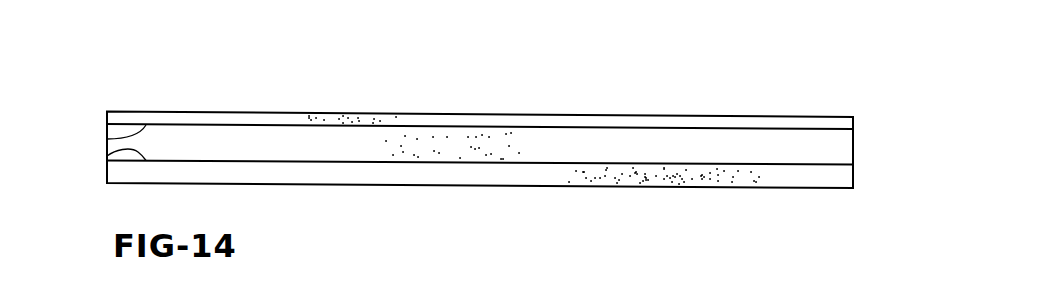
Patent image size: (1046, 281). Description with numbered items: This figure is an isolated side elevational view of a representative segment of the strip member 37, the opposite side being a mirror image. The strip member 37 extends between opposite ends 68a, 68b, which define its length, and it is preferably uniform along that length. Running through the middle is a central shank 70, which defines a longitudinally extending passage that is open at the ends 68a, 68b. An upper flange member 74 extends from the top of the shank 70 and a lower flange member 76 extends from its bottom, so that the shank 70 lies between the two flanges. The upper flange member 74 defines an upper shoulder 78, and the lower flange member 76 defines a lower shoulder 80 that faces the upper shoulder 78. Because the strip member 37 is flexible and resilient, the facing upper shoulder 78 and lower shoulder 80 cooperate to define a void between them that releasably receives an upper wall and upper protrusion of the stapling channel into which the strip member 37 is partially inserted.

The strip member 37 is at (824, 85).
The first end of the strip member 68a is at (106, 118).
The second end of the strip member 68b is at (853, 153).
The central shank 70 is at (608, 158).
The upper flange member 74 is at (378, 114).
The lower flange member 76 is at (488, 188).
The upper shoulder 78 is at (107, 139).
The lower shoulder 80 is at (107, 156).